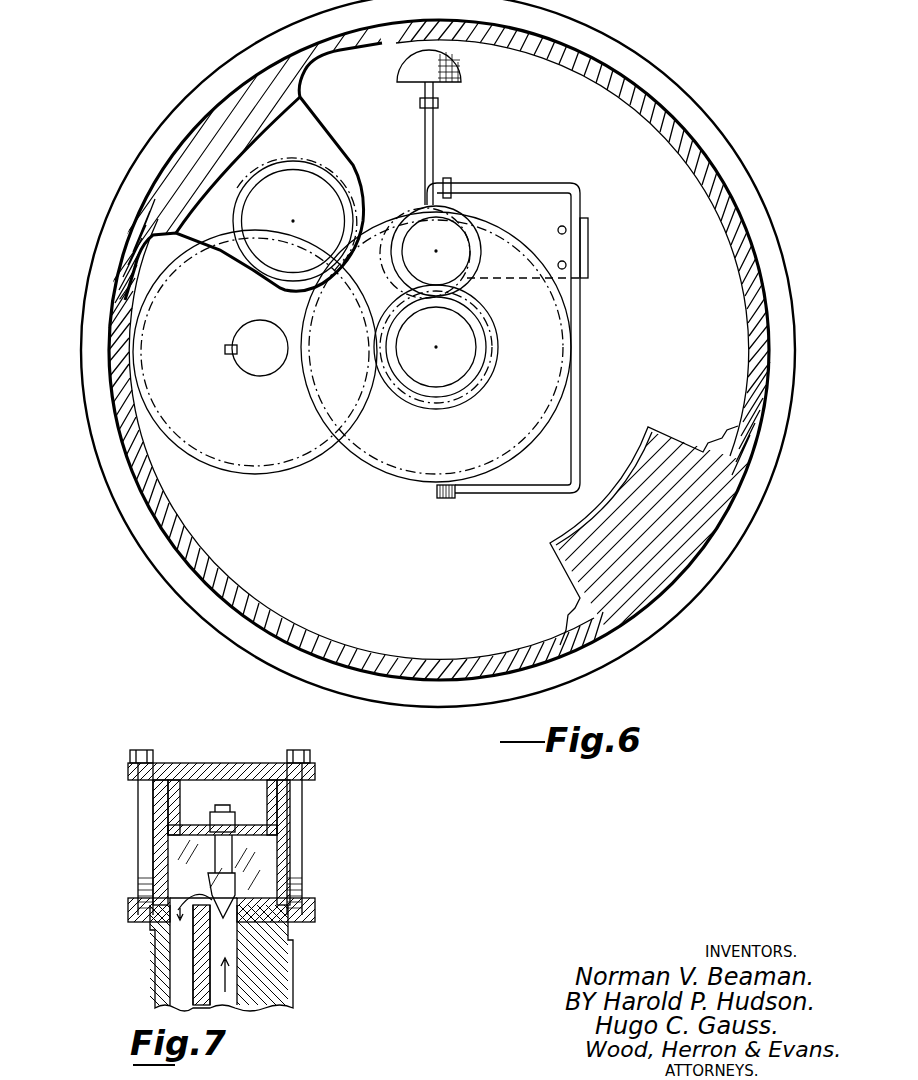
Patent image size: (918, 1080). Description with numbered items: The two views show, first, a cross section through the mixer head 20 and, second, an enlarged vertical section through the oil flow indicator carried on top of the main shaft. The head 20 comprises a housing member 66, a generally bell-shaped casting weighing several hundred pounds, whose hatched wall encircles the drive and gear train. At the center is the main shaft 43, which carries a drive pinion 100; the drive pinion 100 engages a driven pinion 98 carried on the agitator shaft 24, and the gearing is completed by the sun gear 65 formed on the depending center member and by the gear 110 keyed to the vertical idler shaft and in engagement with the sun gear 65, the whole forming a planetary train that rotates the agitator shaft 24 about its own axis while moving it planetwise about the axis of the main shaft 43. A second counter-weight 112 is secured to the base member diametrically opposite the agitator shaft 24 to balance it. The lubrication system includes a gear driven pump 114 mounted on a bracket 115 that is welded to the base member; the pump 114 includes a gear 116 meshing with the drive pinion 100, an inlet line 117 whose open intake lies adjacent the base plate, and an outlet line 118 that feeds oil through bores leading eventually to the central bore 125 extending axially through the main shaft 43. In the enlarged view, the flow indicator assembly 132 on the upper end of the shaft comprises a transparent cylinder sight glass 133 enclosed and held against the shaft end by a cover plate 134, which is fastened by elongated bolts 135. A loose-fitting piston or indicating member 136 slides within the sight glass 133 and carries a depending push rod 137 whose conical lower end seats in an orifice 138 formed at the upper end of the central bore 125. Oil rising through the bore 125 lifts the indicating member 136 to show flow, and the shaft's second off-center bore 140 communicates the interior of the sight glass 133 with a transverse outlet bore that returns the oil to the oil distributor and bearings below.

In FIG. 6, the head 20 is at (735, 165).
In FIG. 6, the housing member 66 is at (652, 108).
In FIG. 6, the gear 110 is at (380, 186).
In FIG. 6, the inlet line 117 is at (430, 127).
In FIG. 6, the gear driven pump 114 is at (445, 243).
In FIG. 6, the bracket 115 is at (590, 240).
In FIG. 6, the gear 116 is at (480, 265).
In FIG. 6, the main shaft 43 is at (457, 360).
In FIG. 7, the main shaft 43 is at (280, 970).
In FIG. 6, the drive pinion 100 is at (455, 398).
In FIG. 6, the sun gear 65 is at (390, 473).
In FIG. 6, the driven pinion 98 is at (320, 453).
In FIG. 6, the agitator shaft 24 is at (260, 357).
In FIG. 6, the outlet line 118 is at (507, 490).
In FIG. 6, the second counter-weight 112 is at (667, 458).
In FIG. 7, the cover plate 134 is at (210, 765).
In FIG. 7, the elongated bolts 135 is at (140, 830).
In FIG. 7, the transparent cylinder sight glass 133 is at (297, 805).
In FIG. 7, the flow indicator assembly 132 is at (300, 846).
In FIG. 7, the piston or indicating member 136 is at (257, 793).
In FIG. 7, the push rod 137 is at (224, 864).
In FIG. 7, the orifice 138 is at (237, 910).
In FIG. 7, the second off-center bore 140 is at (180, 977).
In FIG. 7, the central bore 125 is at (230, 997).